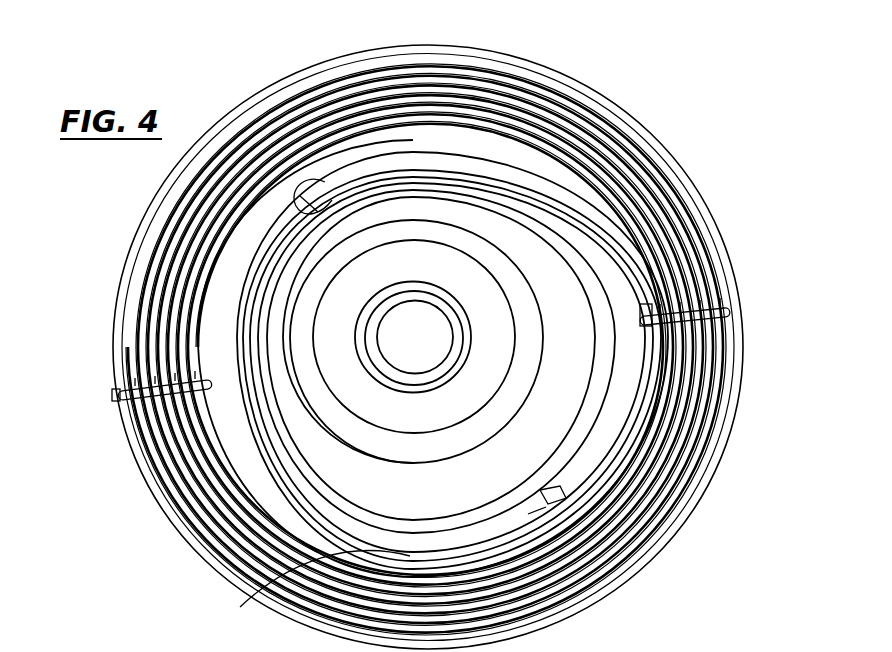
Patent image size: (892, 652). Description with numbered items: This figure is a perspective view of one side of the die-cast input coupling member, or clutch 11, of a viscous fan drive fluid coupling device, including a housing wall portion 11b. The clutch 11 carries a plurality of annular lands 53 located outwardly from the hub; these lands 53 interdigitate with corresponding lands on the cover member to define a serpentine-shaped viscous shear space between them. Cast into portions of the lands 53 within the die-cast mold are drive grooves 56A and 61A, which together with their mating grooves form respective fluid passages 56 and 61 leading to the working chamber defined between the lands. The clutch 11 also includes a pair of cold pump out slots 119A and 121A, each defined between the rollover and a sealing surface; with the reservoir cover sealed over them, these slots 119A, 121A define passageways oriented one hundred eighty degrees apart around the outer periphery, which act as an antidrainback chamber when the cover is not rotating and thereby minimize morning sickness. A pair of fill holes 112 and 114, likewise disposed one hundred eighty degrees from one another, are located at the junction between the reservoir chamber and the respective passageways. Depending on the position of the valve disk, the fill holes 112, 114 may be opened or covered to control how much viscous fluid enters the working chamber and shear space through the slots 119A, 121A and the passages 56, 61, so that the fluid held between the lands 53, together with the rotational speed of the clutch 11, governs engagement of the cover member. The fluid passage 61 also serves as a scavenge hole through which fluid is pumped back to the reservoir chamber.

The input coupling member 11 is at (262, 103).
The housing wall portion 11b is at (542, 515).
The annular lands 53 is at (437, 77).
The fluid passage 56 is at (658, 345).
The drive groove 56A is at (687, 300).
The fluid passage 61 is at (148, 400).
The drive groove 61A is at (130, 393).
The fill hole 112 is at (312, 206).
The fill hole 114 is at (570, 494).
The cold pump out slot 119A is at (480, 145).
The cold pump out slot 121A is at (285, 572).